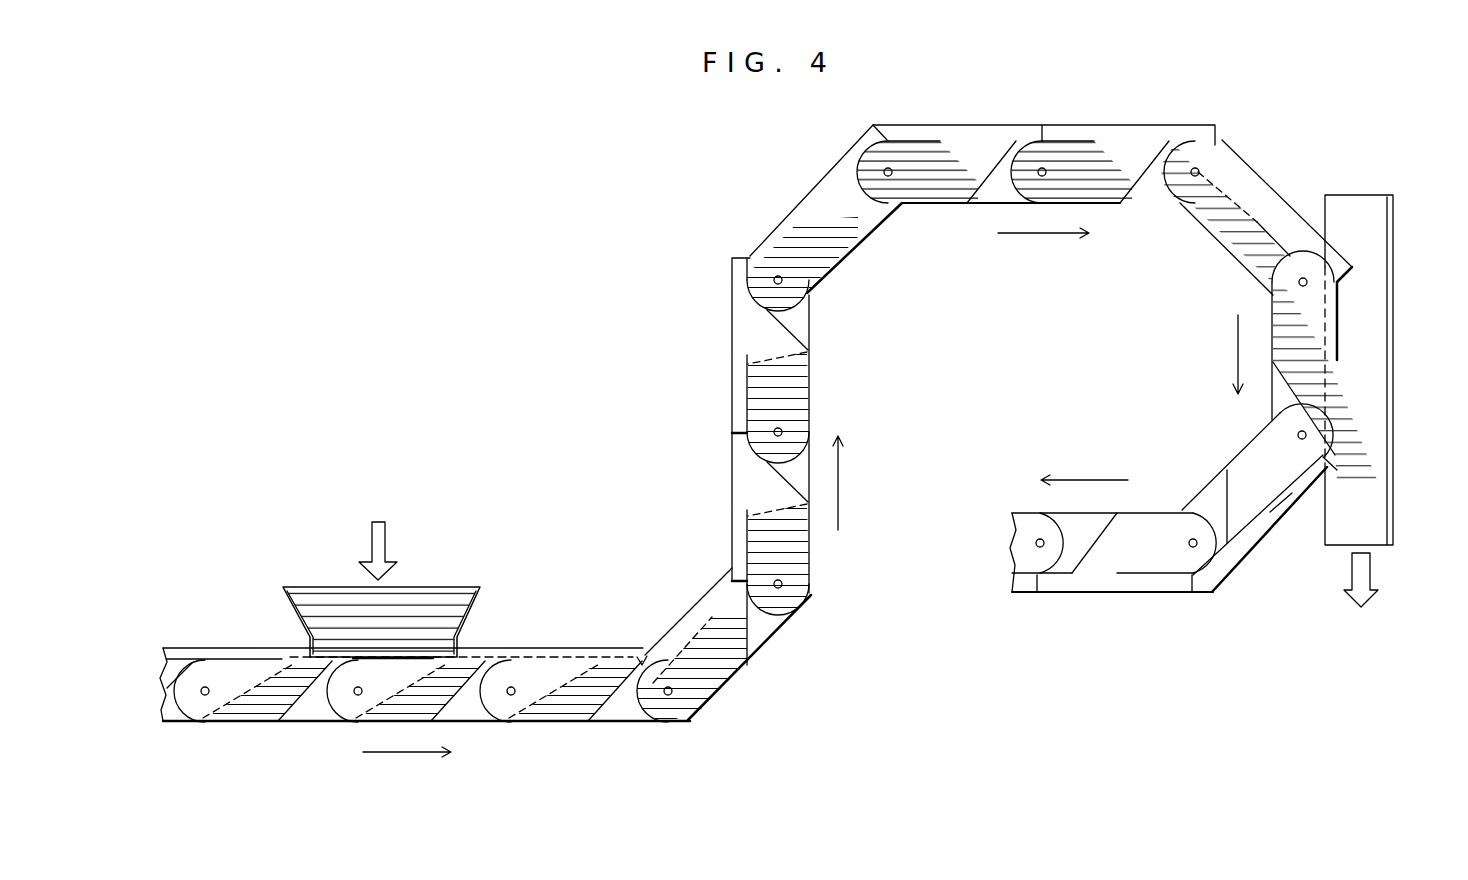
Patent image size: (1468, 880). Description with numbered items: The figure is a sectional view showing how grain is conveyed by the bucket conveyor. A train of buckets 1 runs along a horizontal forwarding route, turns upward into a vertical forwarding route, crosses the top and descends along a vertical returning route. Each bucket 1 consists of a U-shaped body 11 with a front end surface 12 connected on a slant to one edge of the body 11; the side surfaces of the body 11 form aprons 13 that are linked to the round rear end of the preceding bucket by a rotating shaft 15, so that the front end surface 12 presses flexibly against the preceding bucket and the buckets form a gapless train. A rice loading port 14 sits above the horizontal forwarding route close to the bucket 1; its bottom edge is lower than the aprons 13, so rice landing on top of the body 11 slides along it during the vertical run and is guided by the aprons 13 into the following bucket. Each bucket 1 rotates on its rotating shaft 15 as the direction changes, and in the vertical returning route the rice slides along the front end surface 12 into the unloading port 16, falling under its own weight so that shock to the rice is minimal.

The bucket 1 is at (257, 708).
The body 11 is at (555, 723).
The front end surface 12 is at (305, 700).
The aprons 13 is at (740, 325).
The rice loading port 14 is at (478, 603).
The rotating shaft 15 is at (204, 688).
The unloading port 16 is at (1363, 377).